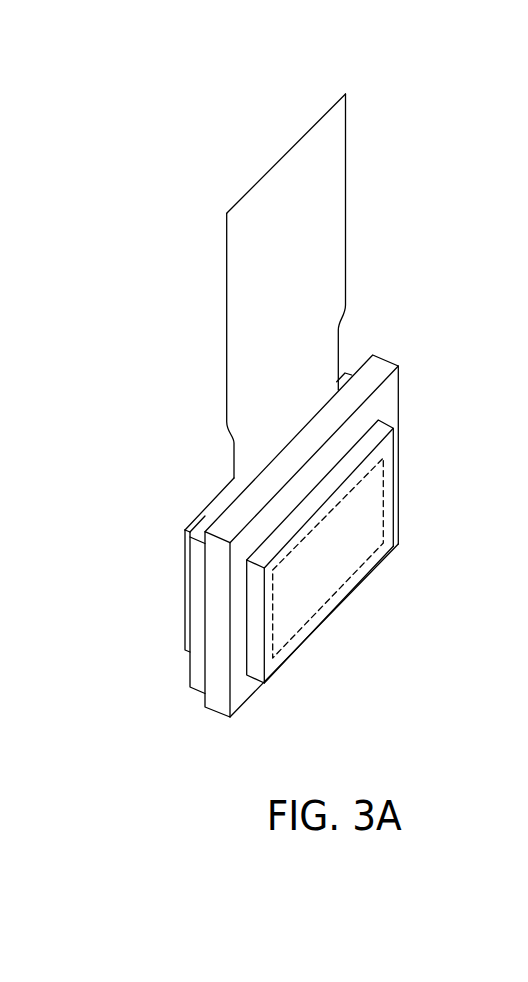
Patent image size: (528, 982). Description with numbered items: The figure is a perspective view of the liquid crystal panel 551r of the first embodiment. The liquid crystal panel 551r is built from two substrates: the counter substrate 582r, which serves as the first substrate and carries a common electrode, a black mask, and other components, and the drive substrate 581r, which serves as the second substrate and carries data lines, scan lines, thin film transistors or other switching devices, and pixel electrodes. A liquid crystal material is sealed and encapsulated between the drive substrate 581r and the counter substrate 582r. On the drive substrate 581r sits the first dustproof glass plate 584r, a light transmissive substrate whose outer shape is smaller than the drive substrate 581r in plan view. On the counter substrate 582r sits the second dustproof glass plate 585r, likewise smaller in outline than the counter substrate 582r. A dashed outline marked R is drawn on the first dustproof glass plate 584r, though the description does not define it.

The liquid crystal panel 551r is at (445, 250).
The drive substrate 581r is at (377, 363).
The counter substrate 582r is at (348, 372).
The first dustproof glass plate 584r is at (380, 422).
The second dustproof glass plate 585r is at (208, 506).
The region R is at (343, 600).